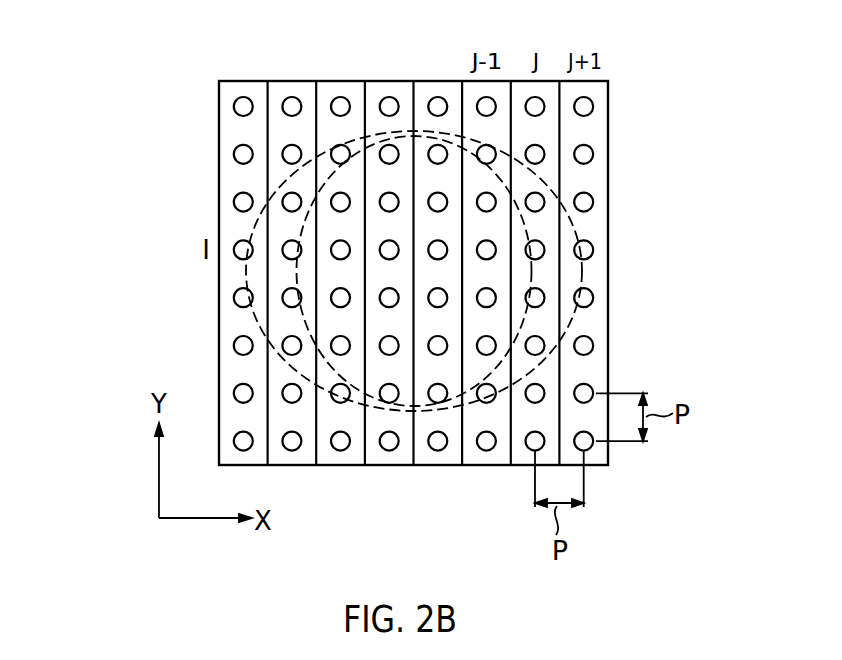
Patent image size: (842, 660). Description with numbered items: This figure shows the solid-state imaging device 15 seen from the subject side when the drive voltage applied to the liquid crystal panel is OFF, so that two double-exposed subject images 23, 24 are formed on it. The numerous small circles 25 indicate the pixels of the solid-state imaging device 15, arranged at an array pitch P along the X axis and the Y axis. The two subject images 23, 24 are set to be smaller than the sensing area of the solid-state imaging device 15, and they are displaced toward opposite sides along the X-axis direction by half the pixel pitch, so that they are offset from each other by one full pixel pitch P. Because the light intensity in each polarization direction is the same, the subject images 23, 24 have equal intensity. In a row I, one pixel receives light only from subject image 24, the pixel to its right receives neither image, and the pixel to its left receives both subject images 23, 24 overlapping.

The solid-state imaging device 15 is at (609, 112).
The subject image 23 is at (313, 157).
The subject image 24 is at (571, 227).
The pixels 25 is at (594, 250).